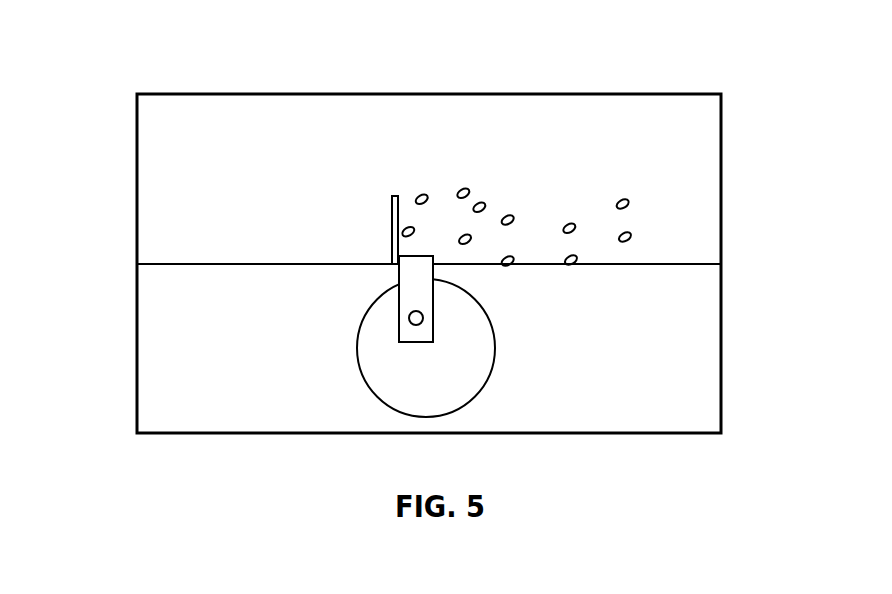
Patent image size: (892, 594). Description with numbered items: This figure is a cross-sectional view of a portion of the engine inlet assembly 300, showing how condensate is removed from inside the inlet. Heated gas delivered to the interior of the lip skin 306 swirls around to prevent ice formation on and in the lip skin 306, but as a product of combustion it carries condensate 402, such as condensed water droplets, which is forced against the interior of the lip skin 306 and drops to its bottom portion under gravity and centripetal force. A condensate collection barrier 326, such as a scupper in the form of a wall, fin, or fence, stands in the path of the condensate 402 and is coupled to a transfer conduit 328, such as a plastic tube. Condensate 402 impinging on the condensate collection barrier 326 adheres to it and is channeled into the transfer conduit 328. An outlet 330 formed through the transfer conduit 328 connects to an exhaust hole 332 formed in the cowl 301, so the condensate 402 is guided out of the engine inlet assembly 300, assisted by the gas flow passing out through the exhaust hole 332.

The engine inlet assembly 300 is at (147, 63).
The cowl 301 is at (721, 366).
The lip skin 306 is at (218, 192).
The condensate collection barrier 326 is at (391, 203).
The transfer conduit 328 is at (432, 272).
The outlet 330 is at (409, 319).
The exhaust hole 332 is at (383, 405).
The condensate 402 is at (508, 215).